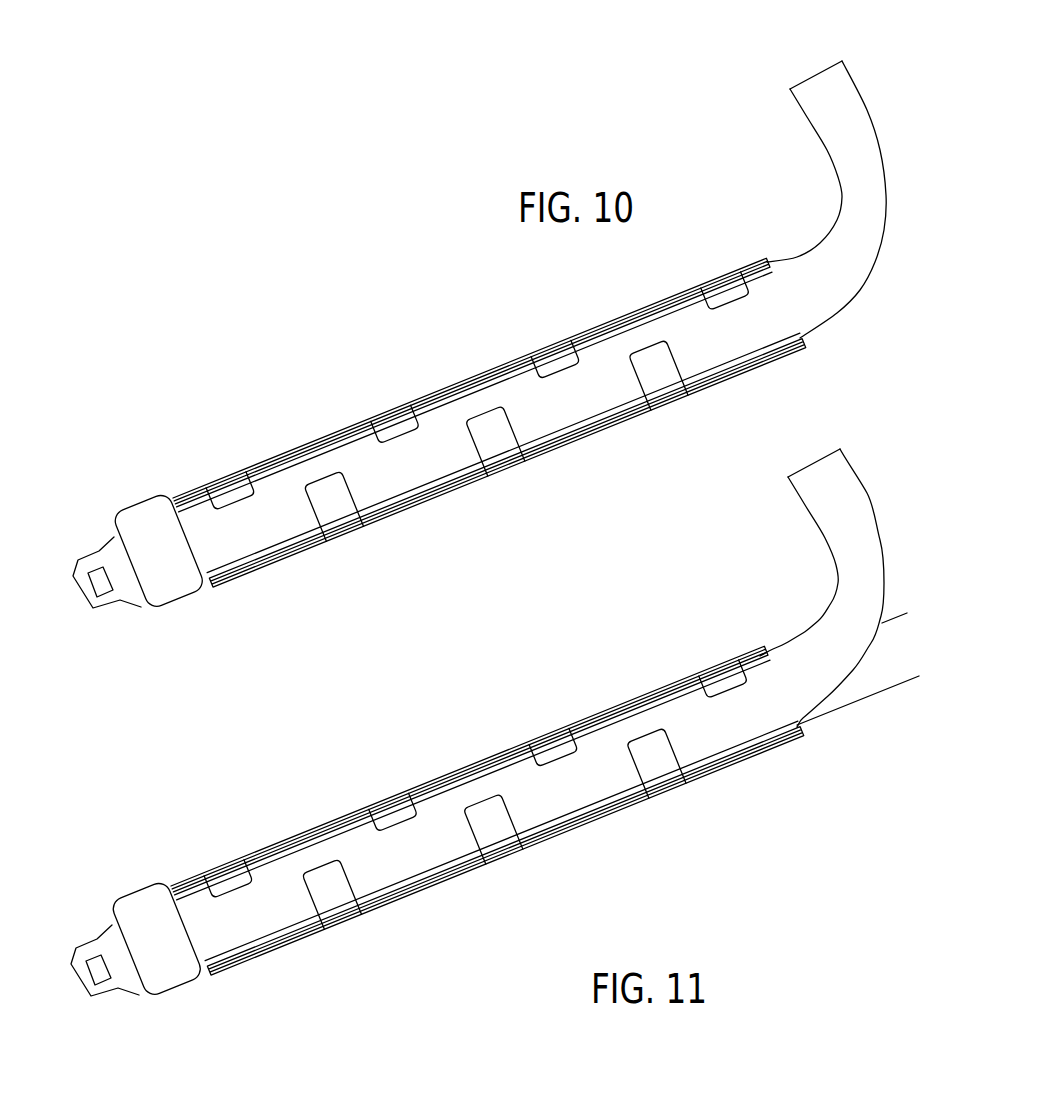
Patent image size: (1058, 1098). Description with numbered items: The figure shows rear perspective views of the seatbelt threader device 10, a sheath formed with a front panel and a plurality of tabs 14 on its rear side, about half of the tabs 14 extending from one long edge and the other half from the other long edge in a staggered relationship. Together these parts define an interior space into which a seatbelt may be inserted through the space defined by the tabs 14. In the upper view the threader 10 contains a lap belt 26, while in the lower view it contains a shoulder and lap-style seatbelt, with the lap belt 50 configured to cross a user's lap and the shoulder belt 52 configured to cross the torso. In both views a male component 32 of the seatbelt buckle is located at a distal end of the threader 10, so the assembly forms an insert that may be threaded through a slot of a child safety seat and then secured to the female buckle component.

In FIG. 10, the seatbelt threader device 10 is at (433, 357).
In FIG. 11, the seatbelt threader device 10 is at (487, 784).
In FIG. 10, the tab 14 is at (503, 447).
In FIG. 11, the tab 14 is at (489, 812).
In FIG. 10, the lap belt 26 is at (830, 120).
In FIG. 10, the male component of the seatbelt buckle 32 is at (137, 517).
In FIG. 11, the male component of the seatbelt buckle 32 is at (137, 890).
In FIG. 11, the lap belt 50 is at (858, 732).
In FIG. 11, the shoulder belt 52 is at (790, 588).